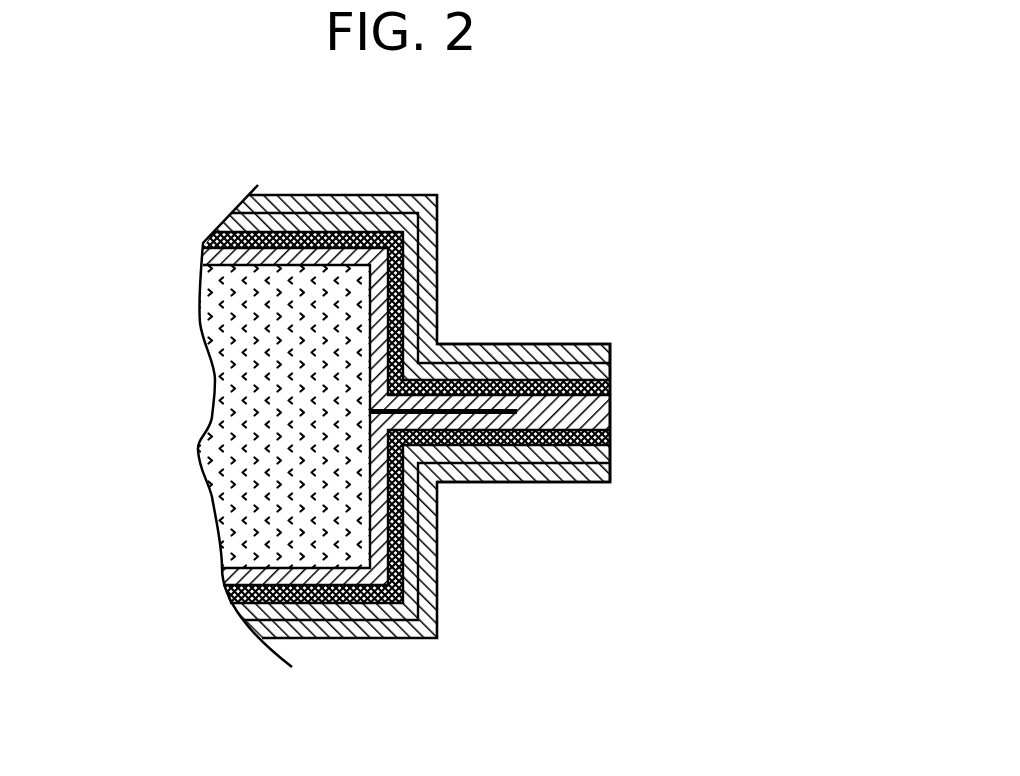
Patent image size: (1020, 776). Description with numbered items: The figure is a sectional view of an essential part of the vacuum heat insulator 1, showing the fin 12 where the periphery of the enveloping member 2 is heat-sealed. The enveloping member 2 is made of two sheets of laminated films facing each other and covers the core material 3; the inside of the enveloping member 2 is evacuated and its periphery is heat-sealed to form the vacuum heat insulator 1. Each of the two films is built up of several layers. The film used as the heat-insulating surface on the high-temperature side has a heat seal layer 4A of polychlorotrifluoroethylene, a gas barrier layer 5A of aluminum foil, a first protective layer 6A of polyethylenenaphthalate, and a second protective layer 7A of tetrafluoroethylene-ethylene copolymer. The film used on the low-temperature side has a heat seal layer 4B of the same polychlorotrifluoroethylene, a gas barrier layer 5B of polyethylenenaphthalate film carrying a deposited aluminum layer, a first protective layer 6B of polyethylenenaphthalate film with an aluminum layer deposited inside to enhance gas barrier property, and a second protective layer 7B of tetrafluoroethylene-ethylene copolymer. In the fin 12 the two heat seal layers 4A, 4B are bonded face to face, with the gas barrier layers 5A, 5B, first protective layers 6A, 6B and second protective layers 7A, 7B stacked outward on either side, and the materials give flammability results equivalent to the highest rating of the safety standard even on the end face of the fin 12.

The vacuum heat insulator 1 is at (478, 378).
The enveloping member 2 is at (437, 285).
The core material 3 is at (437, 577).
The heat seal layer 4A is at (363, 337).
The heat seal layer 4B is at (390, 567).
The gas barrier layer 5A is at (612, 383).
The gas barrier layer 5B is at (612, 442).
The first protective layer 6A is at (612, 365).
The first protective layer 6B is at (612, 455).
The second protective layer 7A is at (613, 345).
The second protective layer 7B is at (612, 475).
The fin 12 is at (497, 347).